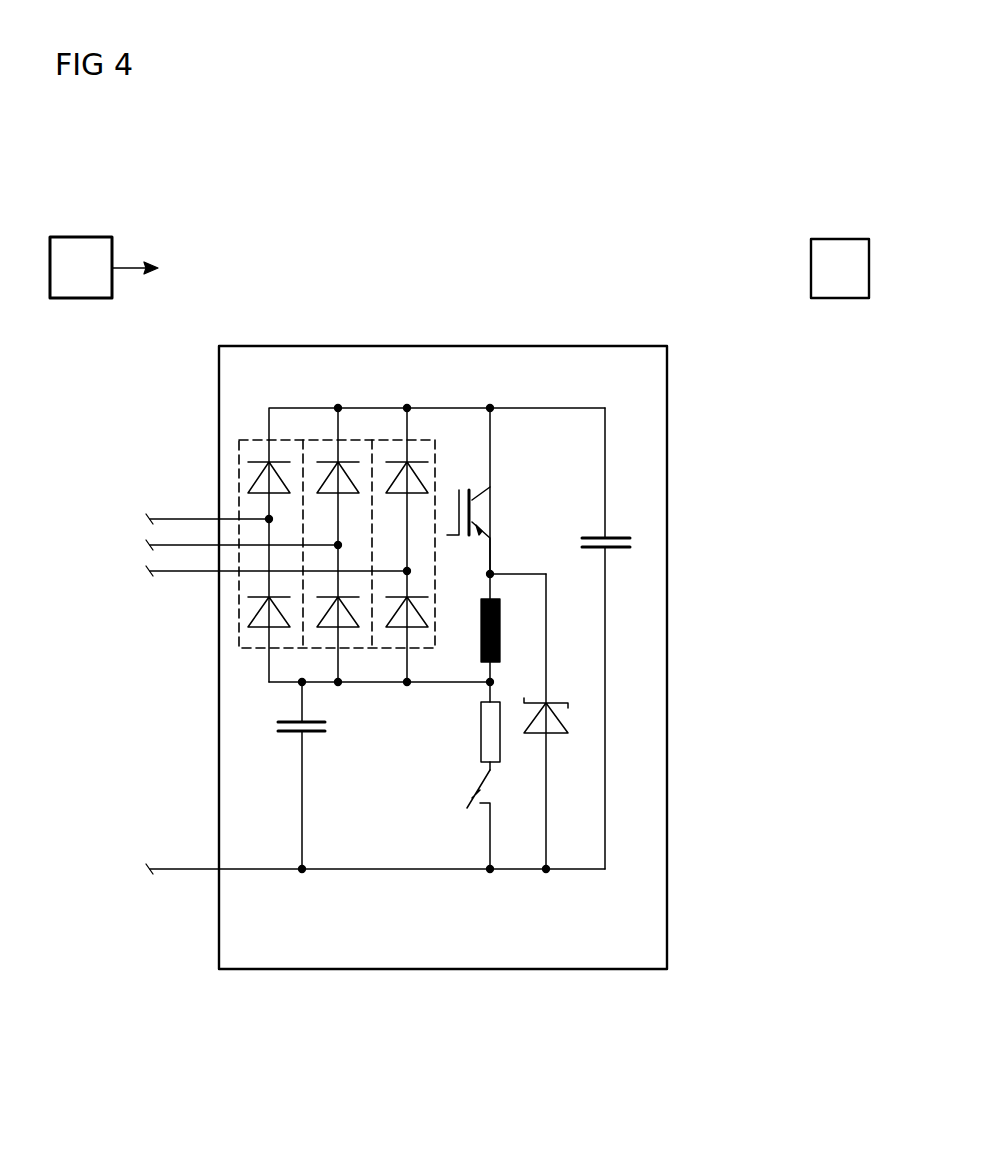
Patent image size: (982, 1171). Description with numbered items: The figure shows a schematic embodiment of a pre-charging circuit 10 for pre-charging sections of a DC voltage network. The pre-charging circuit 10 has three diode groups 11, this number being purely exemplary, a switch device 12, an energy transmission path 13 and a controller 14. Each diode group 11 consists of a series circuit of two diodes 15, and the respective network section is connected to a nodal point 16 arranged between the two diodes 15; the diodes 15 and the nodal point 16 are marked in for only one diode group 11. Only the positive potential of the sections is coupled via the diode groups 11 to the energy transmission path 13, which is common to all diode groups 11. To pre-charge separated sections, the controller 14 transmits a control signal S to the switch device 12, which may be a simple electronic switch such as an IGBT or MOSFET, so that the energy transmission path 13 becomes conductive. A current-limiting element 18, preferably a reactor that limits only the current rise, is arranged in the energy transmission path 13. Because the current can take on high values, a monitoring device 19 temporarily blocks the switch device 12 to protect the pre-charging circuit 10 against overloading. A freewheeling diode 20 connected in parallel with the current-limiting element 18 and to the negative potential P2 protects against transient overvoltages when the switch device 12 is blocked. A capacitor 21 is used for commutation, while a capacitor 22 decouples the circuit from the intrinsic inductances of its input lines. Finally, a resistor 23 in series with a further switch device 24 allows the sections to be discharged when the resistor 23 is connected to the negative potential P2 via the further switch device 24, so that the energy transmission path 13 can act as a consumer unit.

The pre-charging circuit 10 is at (723, 641).
The diode groups 11 is at (255, 440).
The switch device 12 is at (498, 497).
The energy transmission path 13 is at (492, 583).
The controller 14 is at (82, 237).
The diodes 15 is at (250, 484).
The nodal point 16 is at (268, 517).
The current-limiting element 18 is at (500, 627).
The monitoring device 19 is at (842, 239).
The freewheeling diode 20 is at (558, 723).
The capacitor 21 is at (618, 535).
The capacitor 22 is at (289, 737).
The resistor 23 is at (481, 734).
The further switch device 24 is at (472, 800).
The control signal S is at (121, 263).
The negative potential P2 is at (184, 875).